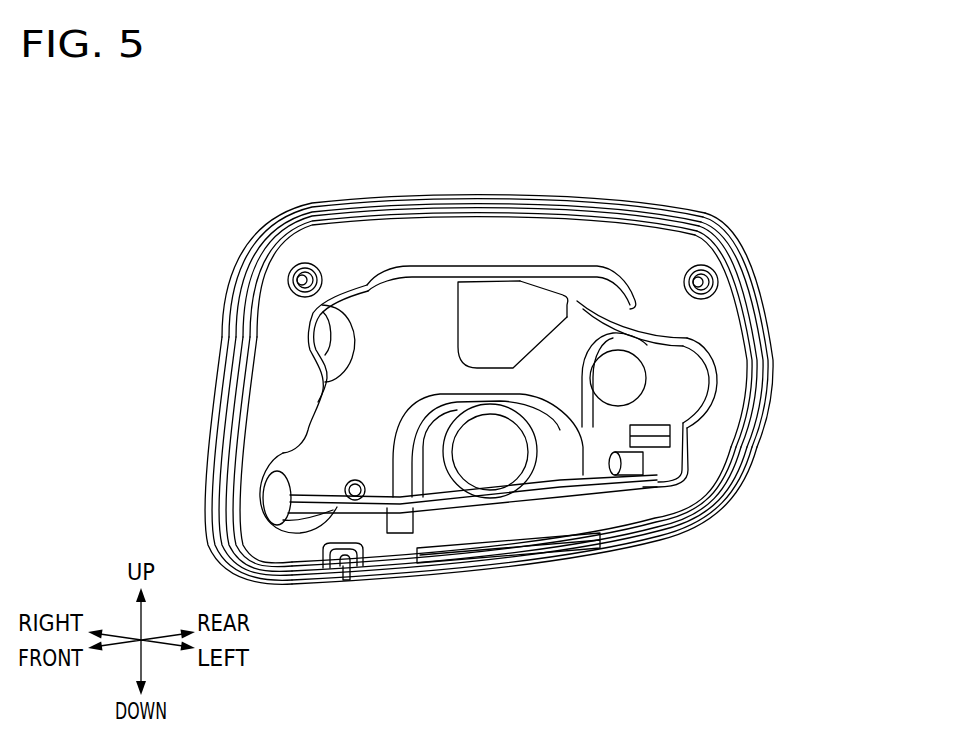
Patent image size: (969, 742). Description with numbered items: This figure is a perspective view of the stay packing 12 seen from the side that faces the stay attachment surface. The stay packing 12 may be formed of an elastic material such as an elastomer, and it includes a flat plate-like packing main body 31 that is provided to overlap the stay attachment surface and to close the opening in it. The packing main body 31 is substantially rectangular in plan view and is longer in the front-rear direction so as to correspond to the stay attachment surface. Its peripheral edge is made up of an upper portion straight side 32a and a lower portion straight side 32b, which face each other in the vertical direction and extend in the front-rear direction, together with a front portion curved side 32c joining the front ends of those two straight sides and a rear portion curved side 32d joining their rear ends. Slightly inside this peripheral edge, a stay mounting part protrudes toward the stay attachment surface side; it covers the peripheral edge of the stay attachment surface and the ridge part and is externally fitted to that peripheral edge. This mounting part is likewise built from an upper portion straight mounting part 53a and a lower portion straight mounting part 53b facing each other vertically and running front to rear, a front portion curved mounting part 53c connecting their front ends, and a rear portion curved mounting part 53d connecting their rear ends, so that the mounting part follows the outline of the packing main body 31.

The stay packing 12 is at (531, 176).
The packing main body 31 is at (645, 251).
The upper portion straight side 32a is at (581, 198).
The lower portion straight side 32b is at (559, 566).
The front portion curved side 32c is at (203, 449).
The rear portion curved side 32d is at (766, 415).
The upper portion straight mounting part 53a is at (422, 203).
The lower portion straight mounting part 53b is at (392, 568).
The front portion curved mounting part 53c is at (235, 366).
The rear portion curved mounting part 53d is at (770, 360).